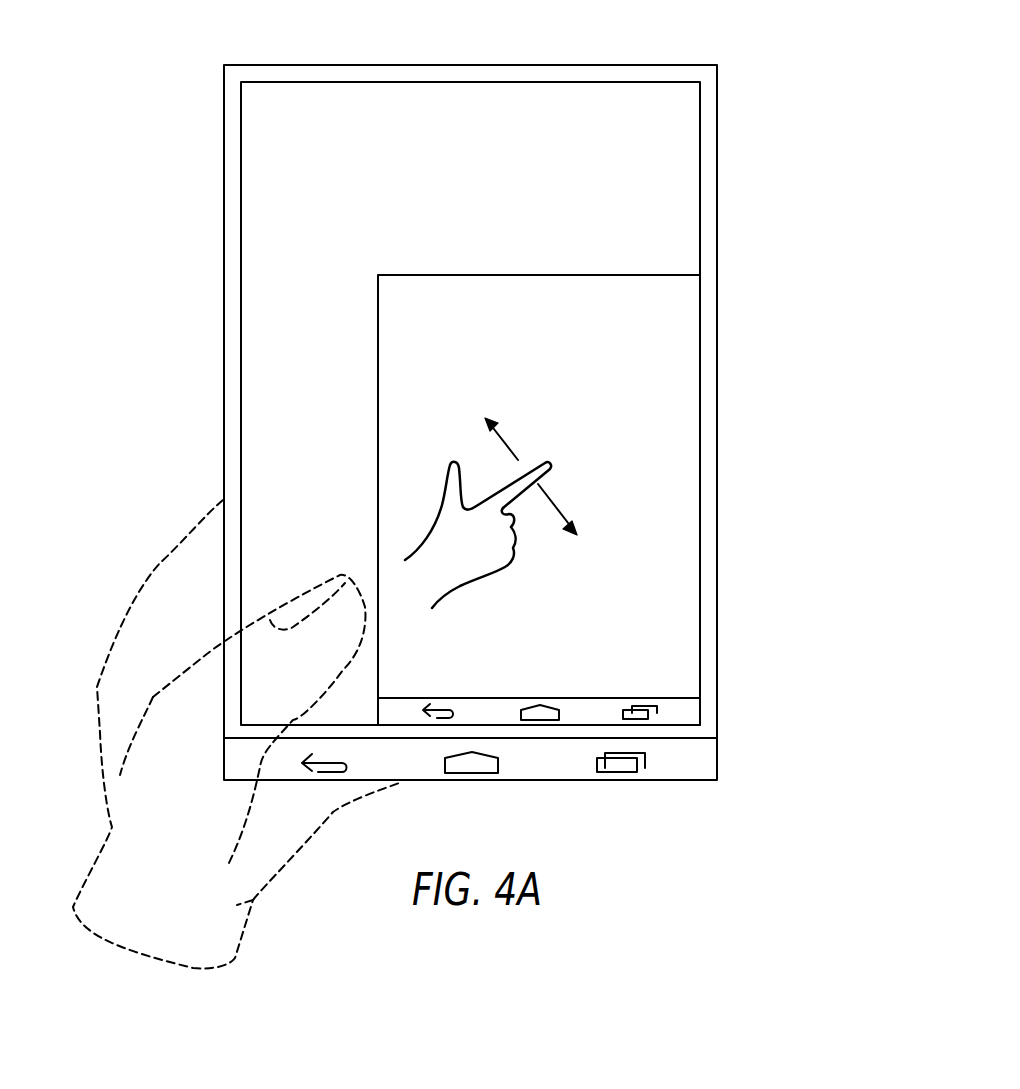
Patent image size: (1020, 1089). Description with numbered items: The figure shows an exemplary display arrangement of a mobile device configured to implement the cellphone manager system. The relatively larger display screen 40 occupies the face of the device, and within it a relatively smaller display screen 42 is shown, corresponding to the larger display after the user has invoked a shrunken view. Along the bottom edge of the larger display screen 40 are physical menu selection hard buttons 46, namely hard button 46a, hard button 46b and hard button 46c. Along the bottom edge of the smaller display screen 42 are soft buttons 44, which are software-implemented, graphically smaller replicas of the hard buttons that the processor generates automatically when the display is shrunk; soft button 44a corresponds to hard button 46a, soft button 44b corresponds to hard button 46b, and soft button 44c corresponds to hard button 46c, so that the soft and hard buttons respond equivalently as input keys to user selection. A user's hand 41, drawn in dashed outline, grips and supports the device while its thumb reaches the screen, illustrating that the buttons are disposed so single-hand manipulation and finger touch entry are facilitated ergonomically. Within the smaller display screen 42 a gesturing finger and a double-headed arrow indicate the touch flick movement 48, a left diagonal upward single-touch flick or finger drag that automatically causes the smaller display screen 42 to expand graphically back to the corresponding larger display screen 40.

The larger display screen 40 is at (587, 65).
The hand 41 is at (192, 532).
The smaller display screen 42 is at (593, 275).
The soft buttons 44 is at (687, 710).
The soft button 44a is at (443, 705).
The soft button 44b is at (540, 705).
The soft button 44c is at (638, 703).
The hard buttons 46 is at (698, 762).
The hard button 46a is at (335, 773).
The hard button 46b is at (471, 773).
The hard button 46c is at (620, 773).
The touch flick movement 48 is at (537, 435).